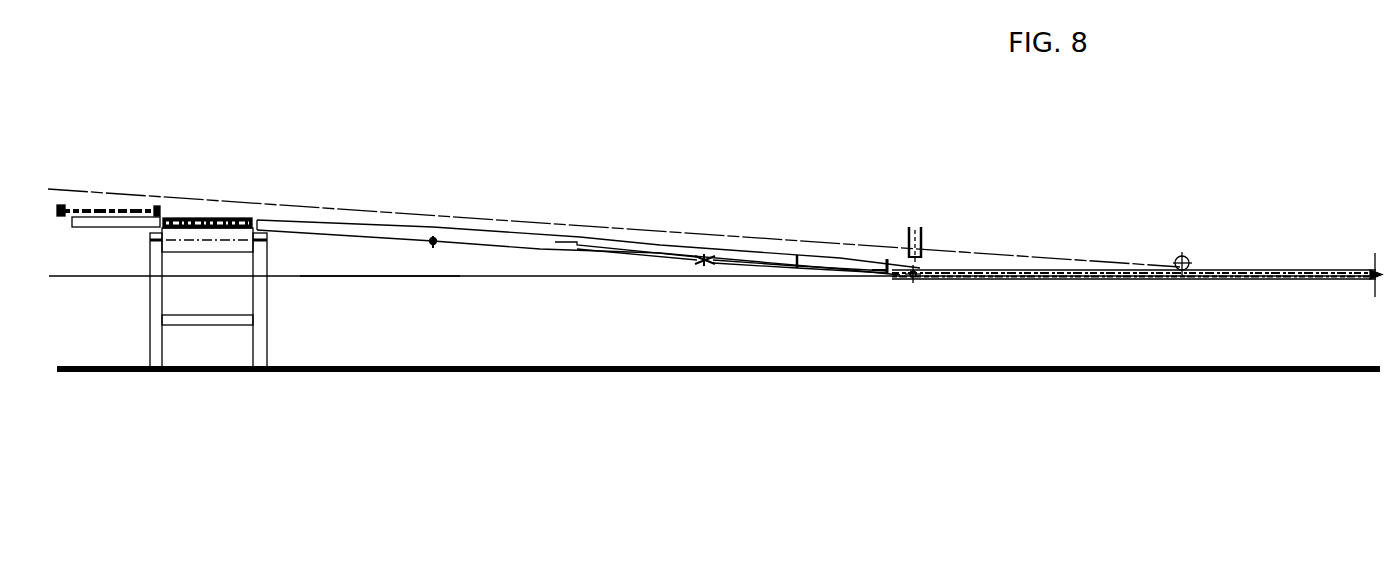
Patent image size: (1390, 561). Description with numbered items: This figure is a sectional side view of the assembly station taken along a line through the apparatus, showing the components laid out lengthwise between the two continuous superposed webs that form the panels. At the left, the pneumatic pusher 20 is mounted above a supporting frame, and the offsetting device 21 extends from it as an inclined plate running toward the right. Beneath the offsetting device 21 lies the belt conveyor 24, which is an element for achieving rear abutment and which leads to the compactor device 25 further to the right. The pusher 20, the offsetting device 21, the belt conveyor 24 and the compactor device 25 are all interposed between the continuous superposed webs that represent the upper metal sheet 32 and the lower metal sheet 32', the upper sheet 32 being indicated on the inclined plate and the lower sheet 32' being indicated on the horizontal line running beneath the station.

The pneumatic pusher 20 is at (110, 212).
The offsetting device 21 is at (343, 229).
The upper metal sheet 32 is at (432, 178).
The belt conveyor 24 is at (556, 241).
The compactor device 25 is at (872, 266).
The lower metal sheet 32' is at (384, 384).